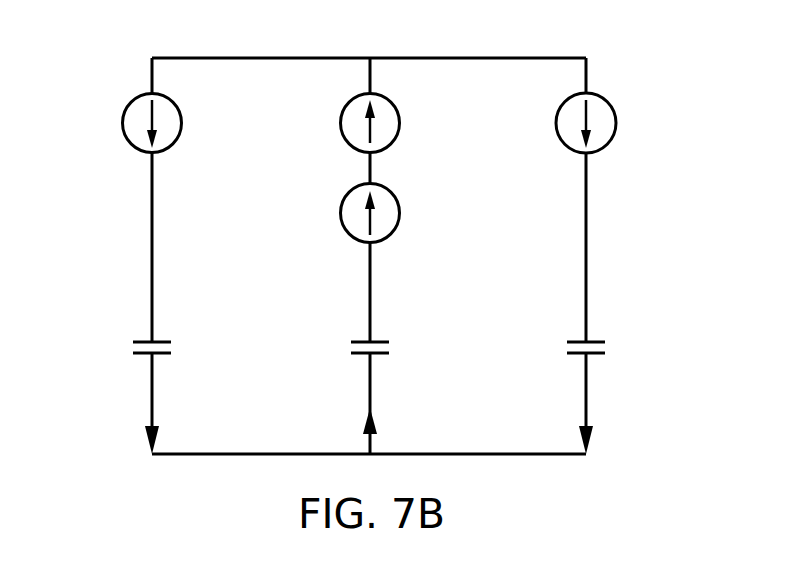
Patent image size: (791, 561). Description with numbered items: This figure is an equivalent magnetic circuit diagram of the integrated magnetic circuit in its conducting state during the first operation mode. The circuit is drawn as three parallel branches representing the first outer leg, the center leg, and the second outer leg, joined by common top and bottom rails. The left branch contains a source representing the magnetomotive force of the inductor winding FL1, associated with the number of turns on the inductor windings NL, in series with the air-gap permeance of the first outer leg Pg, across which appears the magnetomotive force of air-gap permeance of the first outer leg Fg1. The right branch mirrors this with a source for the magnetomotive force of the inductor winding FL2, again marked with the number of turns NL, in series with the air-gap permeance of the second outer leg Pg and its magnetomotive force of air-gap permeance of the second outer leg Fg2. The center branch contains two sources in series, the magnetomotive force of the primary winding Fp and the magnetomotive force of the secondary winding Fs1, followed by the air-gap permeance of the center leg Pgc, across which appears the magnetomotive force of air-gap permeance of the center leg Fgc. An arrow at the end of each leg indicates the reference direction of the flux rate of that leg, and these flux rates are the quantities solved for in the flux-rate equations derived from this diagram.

The magnetomotive force of the inductor winding FL1 is at (113, 106).
The magnetomotive force of the inductor winding FL2 is at (626, 96).
The number of turns on the inductor windings NL is at (370, 123).
The magnetomotive force of the primary winding Fp is at (418, 96).
The magnetomotive force of the secondary winding Fs1 is at (411, 195).
The air-gap permeance of the first or second outer leg Pg is at (322, 343).
The air-gap permeance of the center leg Pgc is at (343, 346).
The magnetomotive force of air-gap permeance of the first outer leg Fg1 is at (179, 330).
The magnetomotive force of air-gap permeance of the second outer leg Fg2 is at (620, 324).
The magnetomotive force of air-gap permeance of the center leg Fgc is at (402, 374).